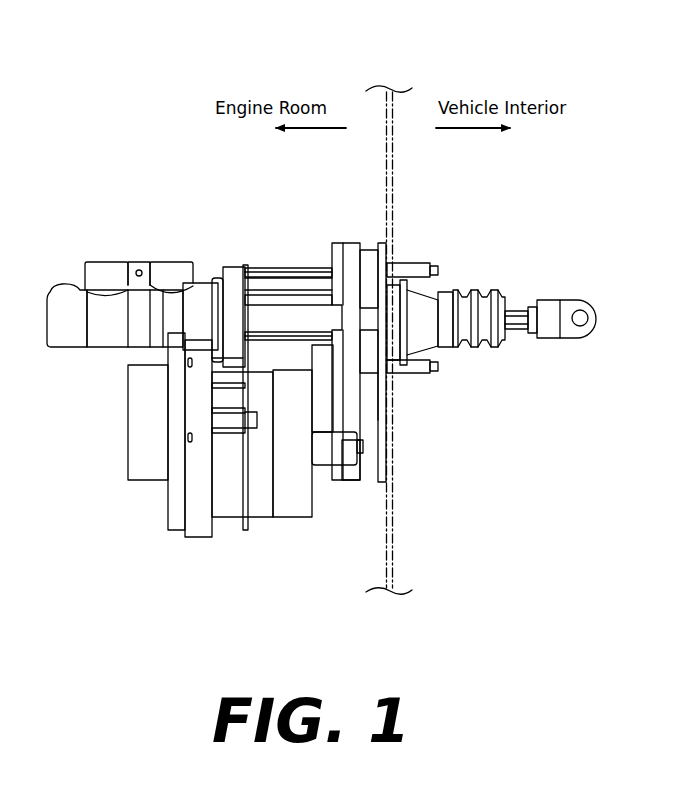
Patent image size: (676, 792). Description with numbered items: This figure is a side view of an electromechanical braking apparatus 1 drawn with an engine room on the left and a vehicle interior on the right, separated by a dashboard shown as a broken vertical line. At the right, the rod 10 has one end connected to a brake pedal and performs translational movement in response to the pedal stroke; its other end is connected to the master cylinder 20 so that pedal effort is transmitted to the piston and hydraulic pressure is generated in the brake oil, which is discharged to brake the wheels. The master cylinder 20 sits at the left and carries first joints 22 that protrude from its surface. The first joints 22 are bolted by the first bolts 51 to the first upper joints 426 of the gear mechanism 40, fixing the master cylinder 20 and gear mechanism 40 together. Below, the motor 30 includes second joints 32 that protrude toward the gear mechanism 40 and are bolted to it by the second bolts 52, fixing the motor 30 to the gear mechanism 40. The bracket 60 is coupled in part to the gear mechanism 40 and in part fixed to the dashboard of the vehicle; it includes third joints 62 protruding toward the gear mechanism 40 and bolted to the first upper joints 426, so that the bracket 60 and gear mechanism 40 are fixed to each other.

The electromechanical braking apparatus 1 is at (80, 92).
The rod 10 is at (517, 318).
The master cylinder 20 is at (57, 280).
The first joints 22 is at (232, 308).
The motor 30 is at (192, 548).
The second joints 32 is at (315, 456).
The gear mechanism 40 is at (280, 238).
The first upper joints 426 is at (302, 306).
The first bolts 51 is at (213, 309).
The second bolts 52 is at (362, 458).
The bracket 60 is at (384, 246).
The third joints 62 is at (384, 330).